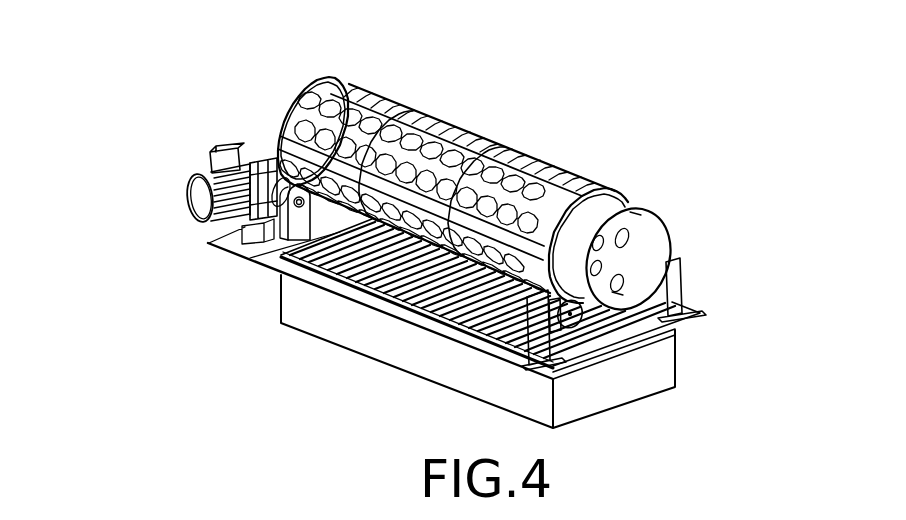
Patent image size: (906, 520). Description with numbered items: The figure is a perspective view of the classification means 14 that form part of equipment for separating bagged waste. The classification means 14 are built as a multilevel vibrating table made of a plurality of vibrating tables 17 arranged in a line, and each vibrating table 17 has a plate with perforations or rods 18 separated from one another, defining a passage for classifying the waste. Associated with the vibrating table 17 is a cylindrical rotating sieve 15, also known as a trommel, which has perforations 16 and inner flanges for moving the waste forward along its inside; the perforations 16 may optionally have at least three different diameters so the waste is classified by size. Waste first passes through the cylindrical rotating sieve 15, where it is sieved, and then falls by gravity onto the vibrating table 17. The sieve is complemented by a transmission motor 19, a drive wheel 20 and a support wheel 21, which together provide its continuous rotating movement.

The classification means 14 is at (642, 127).
The cylindrical rotating sieve 15 is at (410, 160).
The perforations 16 is at (370, 112).
The vibrating table 17 is at (355, 327).
The perforations or rods 18 is at (450, 328).
The transmission motor 19 is at (193, 203).
The drive wheel 20 is at (243, 228).
The support wheel 21 is at (665, 343).